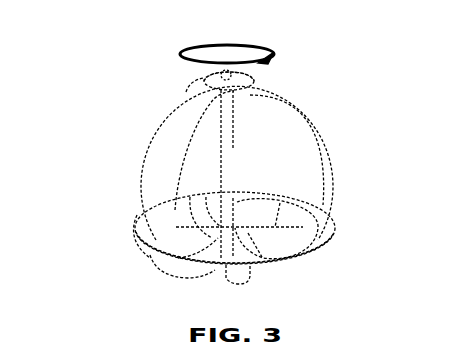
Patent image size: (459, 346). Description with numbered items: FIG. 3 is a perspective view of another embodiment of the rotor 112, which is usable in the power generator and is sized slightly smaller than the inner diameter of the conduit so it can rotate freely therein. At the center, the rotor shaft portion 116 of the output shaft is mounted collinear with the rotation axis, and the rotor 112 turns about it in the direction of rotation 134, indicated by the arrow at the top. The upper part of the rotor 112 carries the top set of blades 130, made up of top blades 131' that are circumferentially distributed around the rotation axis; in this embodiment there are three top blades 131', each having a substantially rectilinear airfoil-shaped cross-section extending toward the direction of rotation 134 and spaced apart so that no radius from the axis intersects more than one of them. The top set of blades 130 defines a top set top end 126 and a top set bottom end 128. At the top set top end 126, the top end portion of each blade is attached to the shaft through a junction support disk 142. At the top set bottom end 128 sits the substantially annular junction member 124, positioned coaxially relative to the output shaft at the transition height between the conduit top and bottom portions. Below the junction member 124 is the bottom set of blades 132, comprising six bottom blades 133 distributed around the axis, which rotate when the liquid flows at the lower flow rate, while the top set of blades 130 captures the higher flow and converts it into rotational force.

The rotor 112 is at (321, 87).
The rotor shaft portion 116 is at (250, 72).
The annular junction member 124 is at (297, 253).
The top set top end 126 is at (207, 86).
The top set bottom end 128 is at (157, 257).
The top set of blades 130 is at (324, 134).
The top blade 131' is at (117, 153).
The bottom set of blades 132 is at (254, 278).
The bottom blade 133 is at (180, 272).
The direction of rotation 134 is at (182, 50).
The junction support disk 142 is at (232, 74).